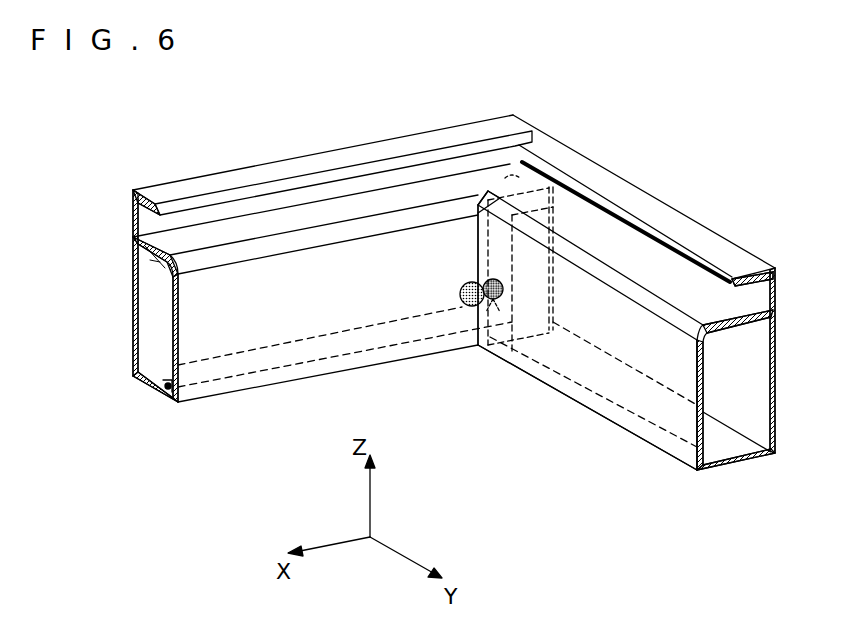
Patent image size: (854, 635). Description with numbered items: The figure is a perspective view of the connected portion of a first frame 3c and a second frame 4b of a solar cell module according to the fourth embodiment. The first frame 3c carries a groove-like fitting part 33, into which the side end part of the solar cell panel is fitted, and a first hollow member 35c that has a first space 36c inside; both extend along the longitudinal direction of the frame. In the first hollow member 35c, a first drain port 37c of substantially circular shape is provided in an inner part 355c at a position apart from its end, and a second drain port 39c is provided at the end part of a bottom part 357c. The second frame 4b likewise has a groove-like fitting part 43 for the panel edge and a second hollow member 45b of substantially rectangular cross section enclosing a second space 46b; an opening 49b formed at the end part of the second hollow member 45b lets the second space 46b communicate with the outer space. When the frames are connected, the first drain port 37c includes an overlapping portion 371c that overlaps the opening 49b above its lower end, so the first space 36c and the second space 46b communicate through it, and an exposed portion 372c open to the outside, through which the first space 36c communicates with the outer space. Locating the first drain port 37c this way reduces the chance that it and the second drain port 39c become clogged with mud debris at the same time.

The first frame 3c is at (340, 150).
The fitting part 33 is at (199, 210).
The first hollow member 35c is at (257, 383).
The inner part 355c is at (173, 312).
The bottom part 357c is at (158, 392).
The first space 36c is at (164, 362).
The second frame 4b is at (655, 196).
The opening 49b is at (565, 182).
The fitting part 43 is at (774, 269).
The second hollow member 45b is at (658, 423).
The second space 46b is at (758, 424).
The first drain port 37c is at (472, 322).
The second drain port 39c is at (530, 323).
The overlapping portion 371c is at (488, 348).
The exposed portion 372c is at (462, 304).